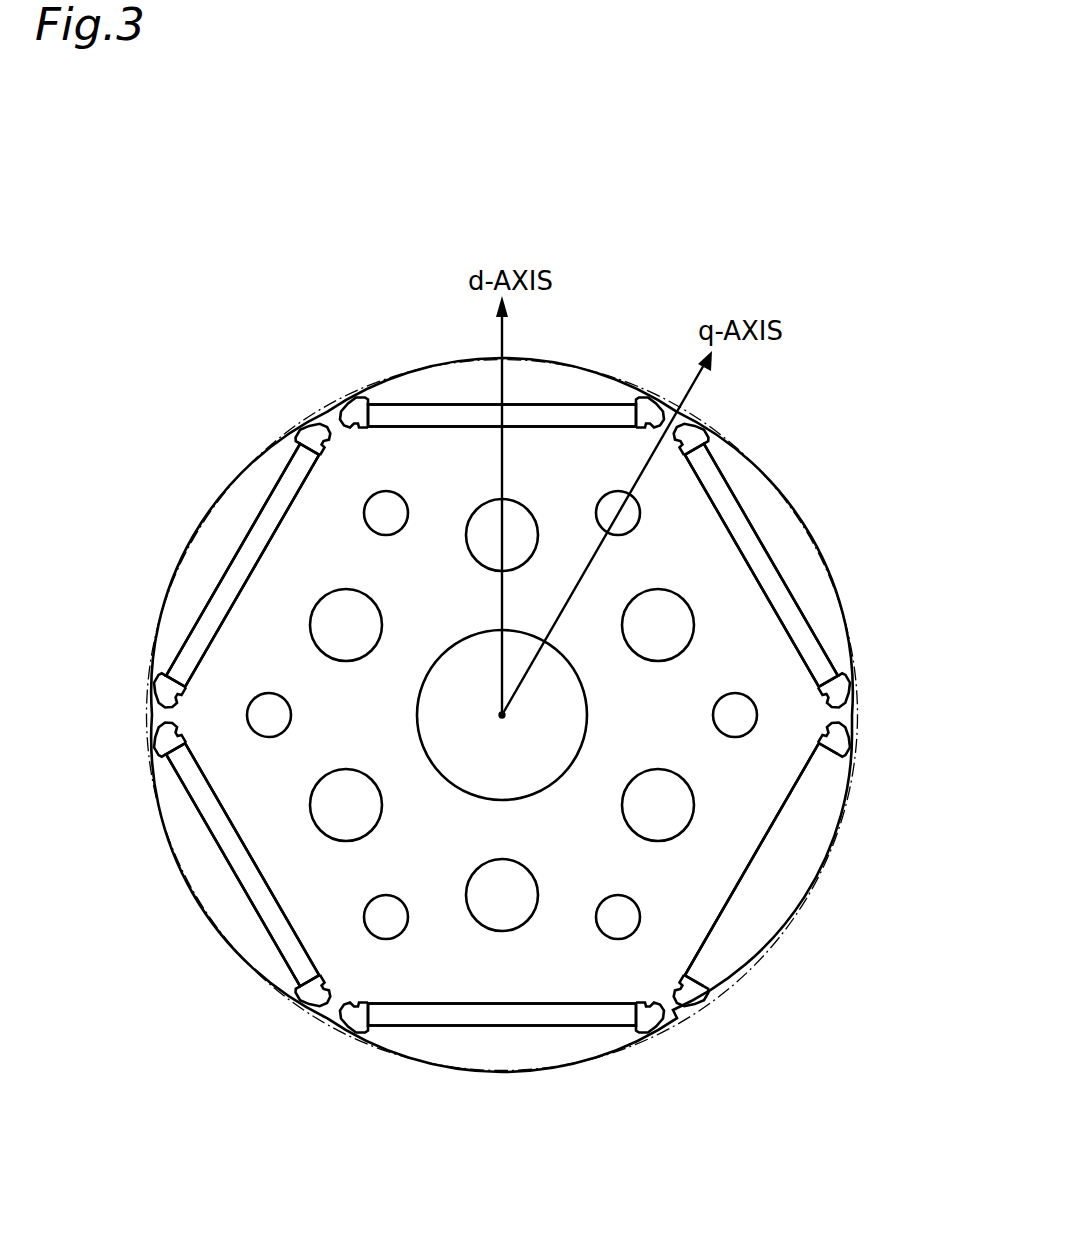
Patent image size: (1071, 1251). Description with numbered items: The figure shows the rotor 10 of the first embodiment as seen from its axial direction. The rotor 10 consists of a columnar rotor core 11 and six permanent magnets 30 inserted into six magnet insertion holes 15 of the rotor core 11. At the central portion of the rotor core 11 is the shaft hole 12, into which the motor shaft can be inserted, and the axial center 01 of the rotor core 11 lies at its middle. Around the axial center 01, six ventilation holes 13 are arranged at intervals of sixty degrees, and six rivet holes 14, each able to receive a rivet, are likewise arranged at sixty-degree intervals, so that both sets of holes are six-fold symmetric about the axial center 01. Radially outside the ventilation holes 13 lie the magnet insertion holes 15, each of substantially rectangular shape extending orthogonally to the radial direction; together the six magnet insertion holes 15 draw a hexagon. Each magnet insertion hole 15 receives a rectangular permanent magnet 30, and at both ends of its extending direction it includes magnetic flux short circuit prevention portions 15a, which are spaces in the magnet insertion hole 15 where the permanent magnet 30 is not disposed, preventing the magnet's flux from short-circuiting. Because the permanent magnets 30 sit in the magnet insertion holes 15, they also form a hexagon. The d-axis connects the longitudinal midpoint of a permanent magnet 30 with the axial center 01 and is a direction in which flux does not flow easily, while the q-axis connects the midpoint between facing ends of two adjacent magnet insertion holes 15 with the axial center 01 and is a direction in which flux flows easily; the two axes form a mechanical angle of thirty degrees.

The rotor 10 is at (722, 232).
The rotor core 11 is at (775, 466).
The shaft hole 12 is at (470, 772).
The axial center 01 is at (499, 716).
The ventilation hole 13 is at (525, 522).
The rivet hole 14 is at (395, 505).
The magnet insertion hole 15 is at (435, 412).
The magnetic flux short circuit prevention portion 15a is at (352, 418).
The permanent magnet 30 is at (536, 412).